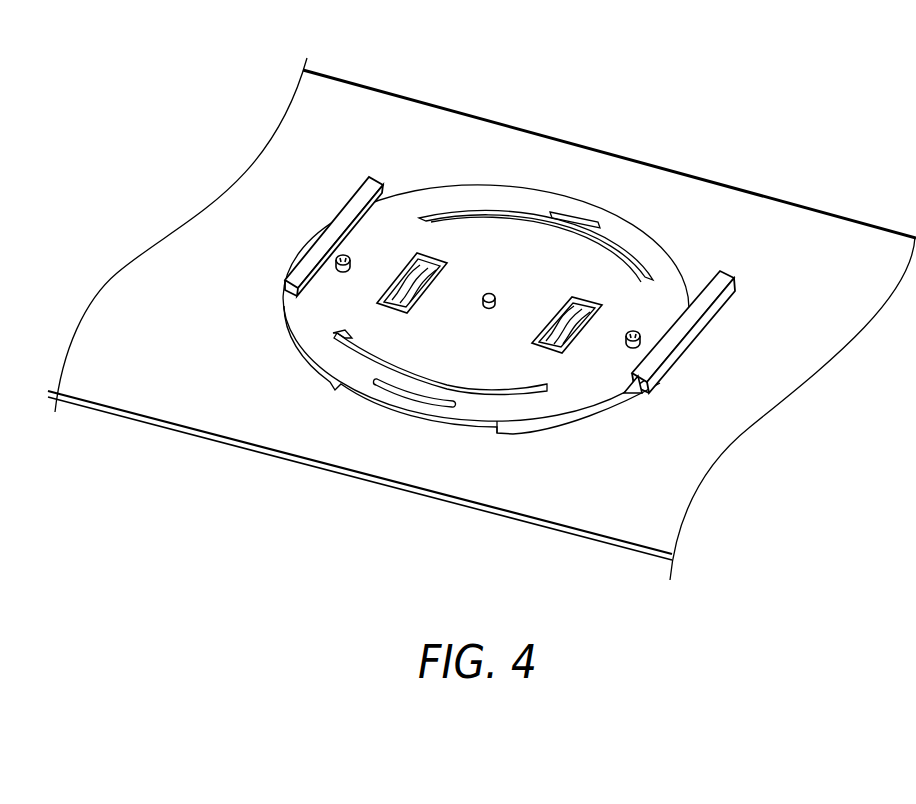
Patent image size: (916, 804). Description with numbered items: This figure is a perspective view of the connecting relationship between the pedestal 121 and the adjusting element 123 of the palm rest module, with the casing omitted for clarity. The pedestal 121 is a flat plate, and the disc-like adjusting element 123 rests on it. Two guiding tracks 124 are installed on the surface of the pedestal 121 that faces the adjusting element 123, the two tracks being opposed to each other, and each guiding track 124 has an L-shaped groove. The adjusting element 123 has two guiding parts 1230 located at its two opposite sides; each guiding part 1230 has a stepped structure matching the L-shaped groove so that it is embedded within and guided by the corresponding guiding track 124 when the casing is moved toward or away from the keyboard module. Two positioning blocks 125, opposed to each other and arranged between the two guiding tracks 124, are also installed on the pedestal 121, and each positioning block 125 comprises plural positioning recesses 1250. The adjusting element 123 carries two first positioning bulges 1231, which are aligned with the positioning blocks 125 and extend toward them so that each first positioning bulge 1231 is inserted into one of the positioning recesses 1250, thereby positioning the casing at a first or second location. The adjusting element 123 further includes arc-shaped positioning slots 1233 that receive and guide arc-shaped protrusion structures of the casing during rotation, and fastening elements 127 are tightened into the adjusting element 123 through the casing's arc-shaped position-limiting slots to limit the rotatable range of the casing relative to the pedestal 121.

The pedestal 121 is at (850, 240).
The adjusting element 123 is at (473, 405).
The first positioning bulge 1231 is at (403, 297).
The arc-shaped positioning slot 1233 is at (377, 365).
The guiding track 124 is at (303, 267).
The positioning block 125 is at (520, 235).
The positioning recess 1250 is at (430, 260).
The fastening element 127 is at (343, 256).
The guiding part 1230 is at (640, 393).